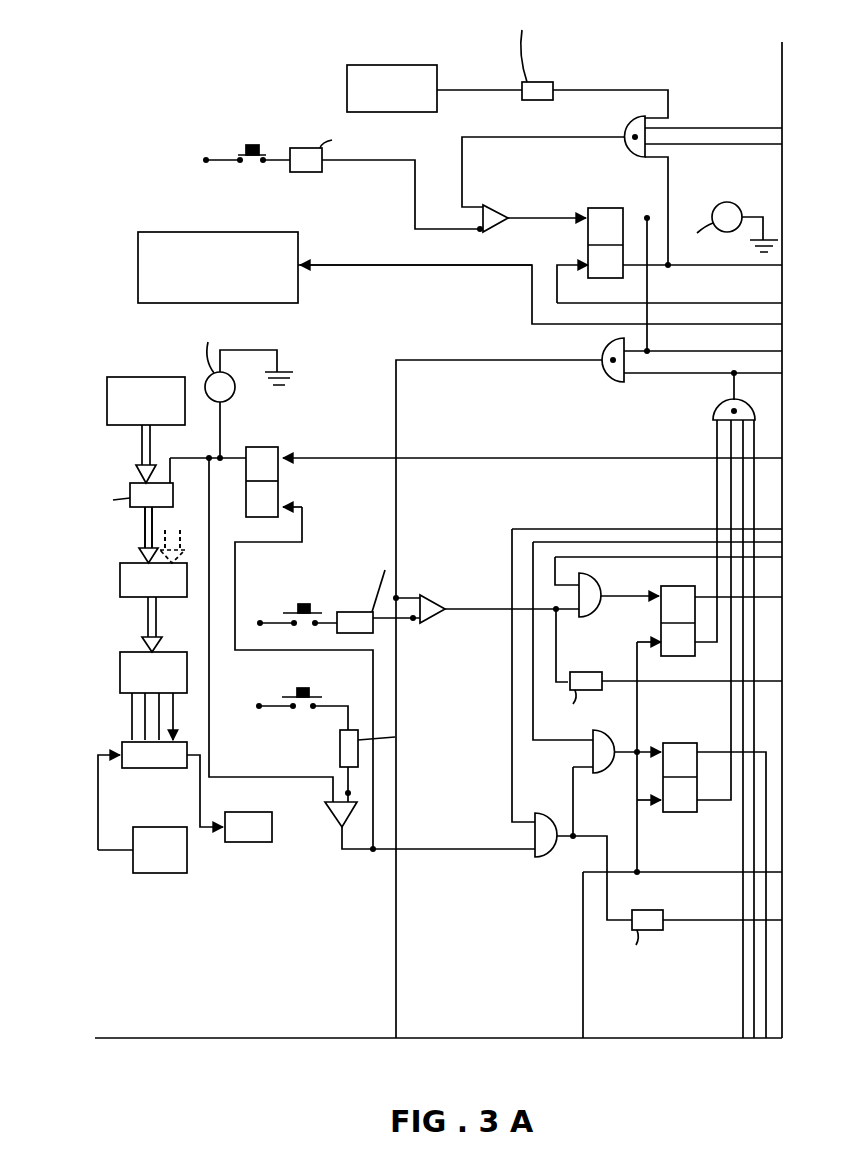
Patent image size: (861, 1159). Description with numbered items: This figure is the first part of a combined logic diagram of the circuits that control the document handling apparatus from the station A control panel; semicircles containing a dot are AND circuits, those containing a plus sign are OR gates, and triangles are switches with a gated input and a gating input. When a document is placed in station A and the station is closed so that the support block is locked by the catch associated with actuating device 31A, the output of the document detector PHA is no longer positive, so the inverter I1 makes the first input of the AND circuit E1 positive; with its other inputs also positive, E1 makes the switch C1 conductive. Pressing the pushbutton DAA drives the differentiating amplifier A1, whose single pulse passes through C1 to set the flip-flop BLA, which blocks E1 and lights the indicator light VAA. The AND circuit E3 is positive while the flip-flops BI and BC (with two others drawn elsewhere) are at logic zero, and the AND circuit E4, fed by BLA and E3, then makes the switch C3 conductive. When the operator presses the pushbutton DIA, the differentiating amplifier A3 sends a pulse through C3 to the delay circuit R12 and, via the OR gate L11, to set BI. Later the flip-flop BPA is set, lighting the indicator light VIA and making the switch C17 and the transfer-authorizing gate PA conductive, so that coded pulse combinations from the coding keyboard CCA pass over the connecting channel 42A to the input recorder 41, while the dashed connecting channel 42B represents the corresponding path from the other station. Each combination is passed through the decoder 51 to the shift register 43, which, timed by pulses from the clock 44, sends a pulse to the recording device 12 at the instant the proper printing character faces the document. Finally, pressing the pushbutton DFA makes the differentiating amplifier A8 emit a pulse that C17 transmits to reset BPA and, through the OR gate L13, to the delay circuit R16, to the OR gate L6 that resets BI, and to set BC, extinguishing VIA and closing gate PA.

The detector PHA is at (347, 86).
The pushbutton DAA is at (240, 135).
The differentiating amplifier A1 is at (312, 170).
The actuating device 31A is at (217, 243).
The inverter I1 is at (546, 82).
The AND circuit E1 is at (627, 128).
The switch C1 is at (492, 217).
The flip-flop BLA is at (595, 240).
The indicator light VAA is at (733, 206).
The coding keyboard CCA is at (146, 385).
The indicator light VIA is at (232, 392).
The flip-flop BPA is at (289, 467).
The transfer-authorizing gate PA is at (130, 488).
The connecting channel 42A is at (138, 551).
The connecting channel 42B is at (173, 555).
The input recorder 41 is at (167, 588).
The decoder 51 is at (135, 655).
The AND circuit E4 is at (605, 353).
The AND circuit E3 is at (720, 403).
The pushbutton DIA is at (292, 599).
The differentiating amplifier A3 is at (357, 613).
The switch C3 is at (437, 594).
The OR gate L11 is at (612, 582).
The flip-flop BI is at (674, 619).
The delay circuit R12 is at (570, 658).
The pushbutton DFA is at (300, 693).
The differentiating amplifier A8 is at (342, 752).
The shift register 43 is at (188, 748).
The flip-flop BC is at (676, 774).
The OR gate L6 is at (612, 770).
The clock 44 is at (167, 827).
The recording device 12 is at (238, 822).
The switch C17 is at (333, 806).
The OR gate L13 is at (545, 857).
The delay circuit R16 is at (640, 893).